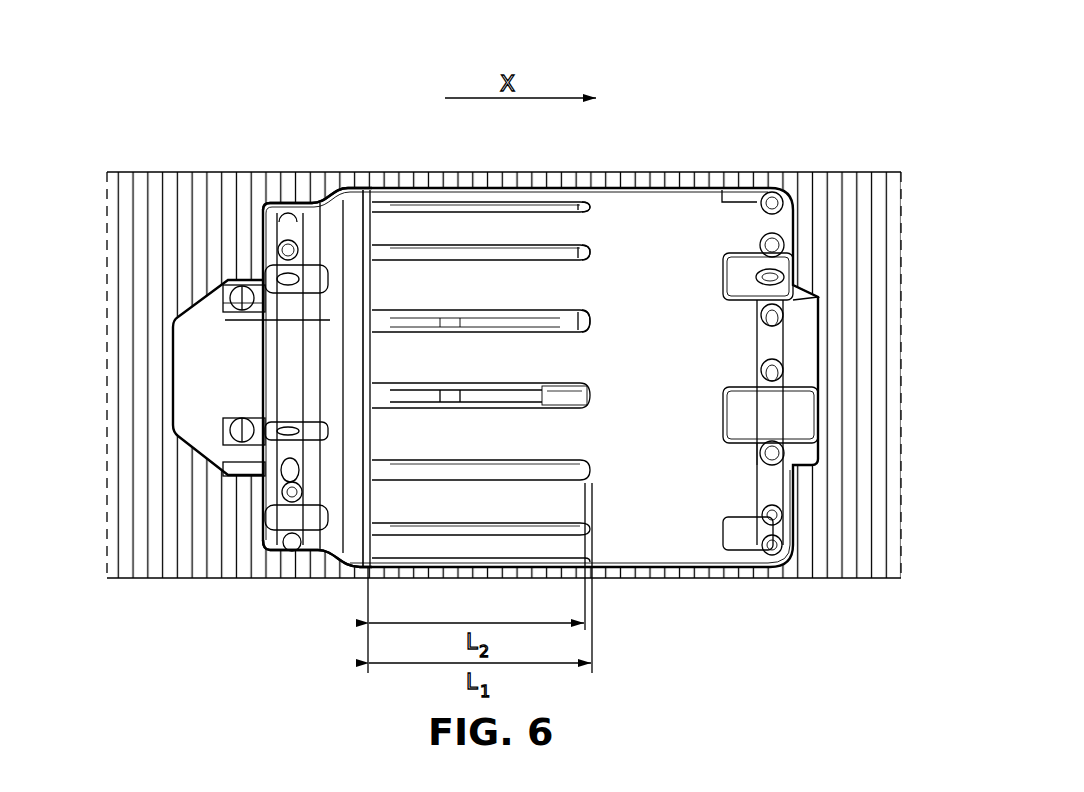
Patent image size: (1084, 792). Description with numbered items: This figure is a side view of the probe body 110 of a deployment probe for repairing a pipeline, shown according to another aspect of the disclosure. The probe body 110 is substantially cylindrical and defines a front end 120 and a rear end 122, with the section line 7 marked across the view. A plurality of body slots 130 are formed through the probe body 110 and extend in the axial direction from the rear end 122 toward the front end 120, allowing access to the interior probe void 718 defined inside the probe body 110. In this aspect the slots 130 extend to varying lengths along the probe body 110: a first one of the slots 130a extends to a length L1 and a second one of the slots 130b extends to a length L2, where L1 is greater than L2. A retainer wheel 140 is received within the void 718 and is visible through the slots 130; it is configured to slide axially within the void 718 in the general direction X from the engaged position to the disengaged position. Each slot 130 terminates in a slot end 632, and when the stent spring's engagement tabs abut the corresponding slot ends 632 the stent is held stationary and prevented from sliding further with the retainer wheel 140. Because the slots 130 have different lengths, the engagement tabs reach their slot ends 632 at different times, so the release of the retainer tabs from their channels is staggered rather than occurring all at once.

The section line 7- 7 is at (107, 172).
The probe body 110 is at (684, 576).
The front end 120 is at (777, 163).
The rear end 122 is at (377, 173).
The body slots 130 is at (529, 308).
The first slot 130a is at (415, 470).
The second slot 130b is at (420, 528).
The retainer wheel 140 is at (590, 396).
The slot end 632 is at (598, 312).
The interior probe void 718 is at (478, 395).